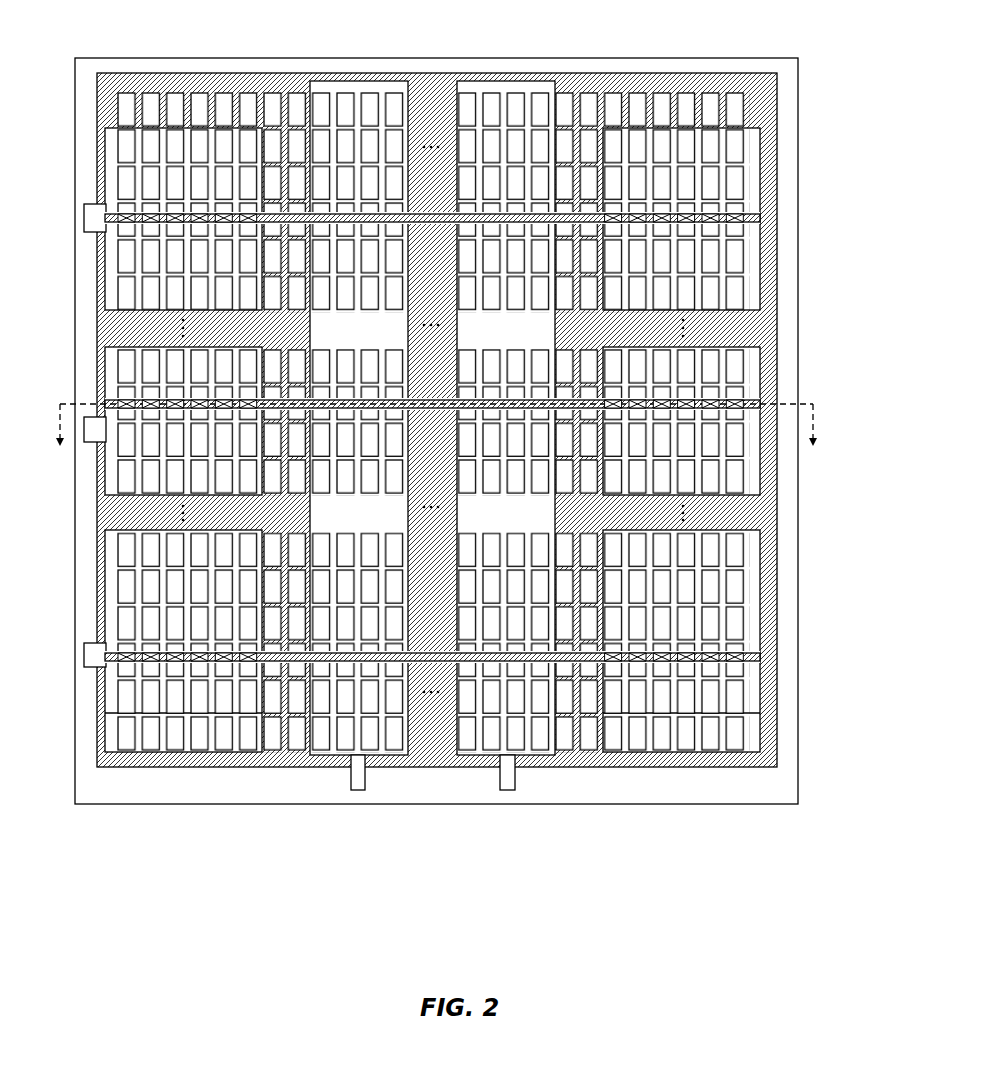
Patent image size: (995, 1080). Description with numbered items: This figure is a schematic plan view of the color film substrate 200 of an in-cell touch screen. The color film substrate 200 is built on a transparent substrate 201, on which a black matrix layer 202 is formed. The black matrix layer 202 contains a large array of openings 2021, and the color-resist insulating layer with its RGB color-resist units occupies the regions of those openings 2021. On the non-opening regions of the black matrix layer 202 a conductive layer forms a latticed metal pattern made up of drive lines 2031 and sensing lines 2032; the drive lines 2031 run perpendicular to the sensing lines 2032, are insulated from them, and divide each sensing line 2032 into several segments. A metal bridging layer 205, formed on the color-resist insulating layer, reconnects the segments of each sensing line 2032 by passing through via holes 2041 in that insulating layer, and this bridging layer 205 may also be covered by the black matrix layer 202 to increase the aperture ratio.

The color film substrate 200 is at (456, 402).
The transparent substrate 201 is at (778, 95).
The black matrix layer 202 is at (757, 325).
The opening 2021 is at (745, 177).
The drive line 2031 is at (360, 791).
The sensing line 2032 is at (97, 614).
The via hole 2041 is at (757, 404).
The metal bridging layer 205 is at (454, 437).